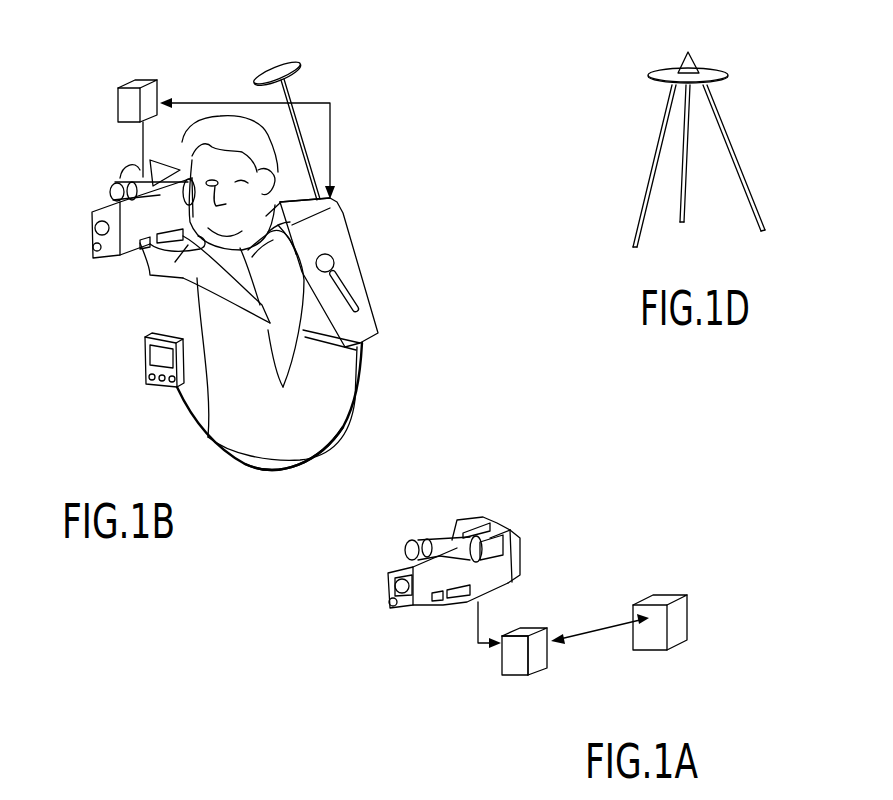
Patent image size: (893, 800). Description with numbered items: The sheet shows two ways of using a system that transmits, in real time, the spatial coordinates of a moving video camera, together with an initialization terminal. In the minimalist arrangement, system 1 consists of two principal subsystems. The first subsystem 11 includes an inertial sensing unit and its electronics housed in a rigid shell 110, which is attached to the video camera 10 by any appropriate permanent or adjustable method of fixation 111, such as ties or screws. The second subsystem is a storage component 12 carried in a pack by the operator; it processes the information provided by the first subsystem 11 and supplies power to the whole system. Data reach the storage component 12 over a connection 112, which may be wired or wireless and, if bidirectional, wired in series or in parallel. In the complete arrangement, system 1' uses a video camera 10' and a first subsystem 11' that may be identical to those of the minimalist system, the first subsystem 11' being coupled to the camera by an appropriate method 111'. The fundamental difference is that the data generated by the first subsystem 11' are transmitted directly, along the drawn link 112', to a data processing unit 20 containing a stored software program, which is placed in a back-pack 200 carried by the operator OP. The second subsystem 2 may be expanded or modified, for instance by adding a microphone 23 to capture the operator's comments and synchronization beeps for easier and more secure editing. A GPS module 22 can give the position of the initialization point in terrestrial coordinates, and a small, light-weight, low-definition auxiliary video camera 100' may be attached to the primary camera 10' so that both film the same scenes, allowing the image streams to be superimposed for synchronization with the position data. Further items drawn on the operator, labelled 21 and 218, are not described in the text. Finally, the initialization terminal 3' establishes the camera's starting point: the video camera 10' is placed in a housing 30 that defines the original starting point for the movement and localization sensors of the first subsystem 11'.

In FIG. 1B, the system 1' is at (73, 133).
In FIG. 1B, the video camera 10' is at (129, 229).
In FIG. 1B, the auxiliary video camera 100' is at (126, 297).
In FIG. 1B, the first subsystem 11' is at (131, 108).
In FIG. 1B, the method of coupling 111' is at (74, 175).
In FIG. 1B, the link between module and backpack 112' is at (270, 136).
In FIG. 1B, the GPS module 22 is at (265, 63).
In FIG. 1B, the operator OP is at (418, 188).
In FIG. 1B, the back-pack 200 is at (349, 212).
In FIG. 1B, the data processing unit 20 is at (352, 233).
In FIG. 1B, the microphone 23 is at (345, 288).
In FIG. 1B, the second subsystem 2 is at (383, 292).
In FIG. 1B, the control display unit 21 is at (143, 370).
In FIG. 1B, the belt 218 is at (280, 478).
In FIG. 1D, the housing 30 is at (690, 58).
In FIG. 1D, the tripod 3' is at (664, 157).
In FIG. 1A, the video camera 10 is at (490, 537).
In FIG. 1A, the system 1 is at (669, 510).
In FIG. 1A, the method of fixation 111 is at (454, 630).
In FIG. 1A, the first subsystem 11 is at (514, 681).
In FIG. 1A, the rigid shell 110 is at (530, 660).
In FIG. 1A, the connection 112 is at (600, 603).
In FIG. 1A, the storage component 12 is at (673, 637).